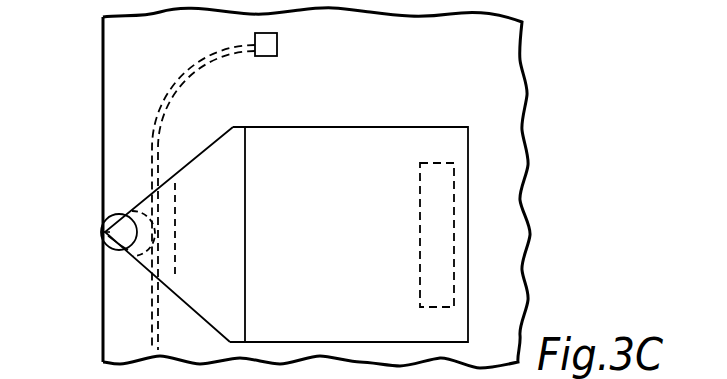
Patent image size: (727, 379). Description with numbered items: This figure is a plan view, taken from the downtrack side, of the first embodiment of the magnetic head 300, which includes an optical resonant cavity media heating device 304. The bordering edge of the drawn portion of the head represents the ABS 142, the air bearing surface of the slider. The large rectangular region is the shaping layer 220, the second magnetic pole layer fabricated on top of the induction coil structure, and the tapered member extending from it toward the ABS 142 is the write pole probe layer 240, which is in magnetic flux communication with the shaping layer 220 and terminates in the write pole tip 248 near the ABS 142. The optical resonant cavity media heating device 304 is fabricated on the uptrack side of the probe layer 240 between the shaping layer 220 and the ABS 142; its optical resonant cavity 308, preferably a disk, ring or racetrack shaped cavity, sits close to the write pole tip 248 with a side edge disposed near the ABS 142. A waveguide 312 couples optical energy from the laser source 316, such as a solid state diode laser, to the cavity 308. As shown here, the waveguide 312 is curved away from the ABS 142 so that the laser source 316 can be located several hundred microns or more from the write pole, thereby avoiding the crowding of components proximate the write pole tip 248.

The magnetic head embodiment 300 is at (90, 100).
The ABS 142 is at (103, 166).
The shaping layer 220 is at (359, 143).
The write pole probe layer 240 is at (206, 170).
The waveguide 312 is at (166, 97).
The laser source 316 is at (278, 45).
The write pole tip 248 is at (427, 242).
The optical resonant cavity 308 is at (110, 216).
The optical resonant cavity media heating device 304 is at (113, 262).